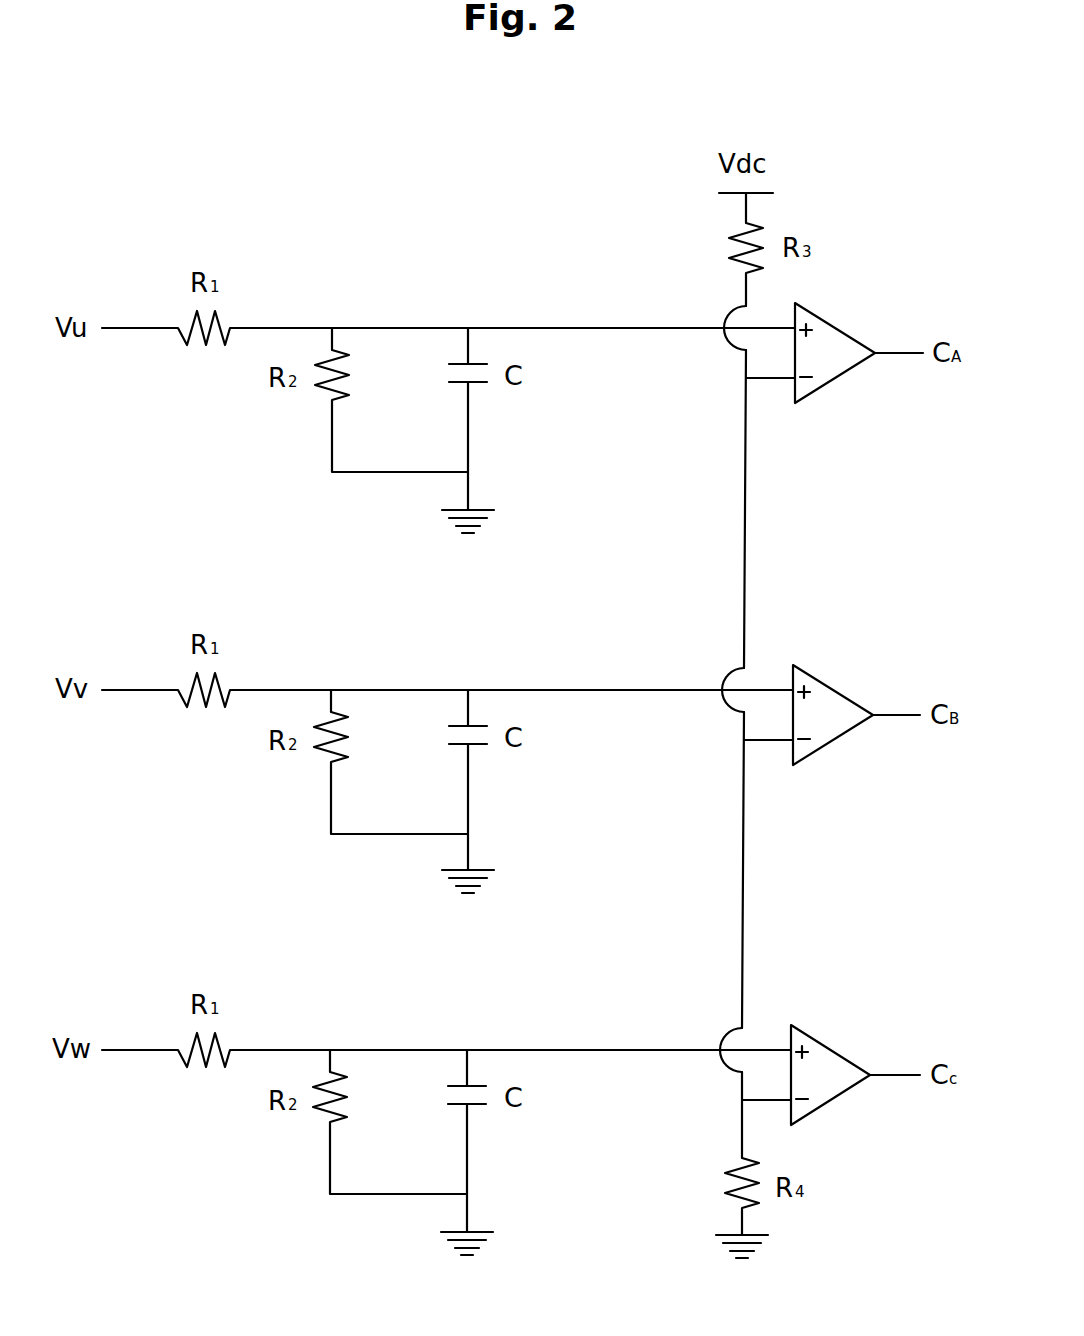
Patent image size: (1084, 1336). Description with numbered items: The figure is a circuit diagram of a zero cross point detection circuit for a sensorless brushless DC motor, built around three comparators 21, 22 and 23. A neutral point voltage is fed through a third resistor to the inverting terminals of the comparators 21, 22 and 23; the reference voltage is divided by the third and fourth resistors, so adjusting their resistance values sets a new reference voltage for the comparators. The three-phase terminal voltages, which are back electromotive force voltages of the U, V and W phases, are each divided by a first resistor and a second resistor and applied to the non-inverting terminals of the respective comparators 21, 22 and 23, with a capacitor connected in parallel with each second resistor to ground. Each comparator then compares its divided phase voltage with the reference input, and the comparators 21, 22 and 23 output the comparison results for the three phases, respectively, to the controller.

The comparator 21 is at (833, 327).
The comparator 22 is at (833, 689).
The comparator 23 is at (831, 1049).